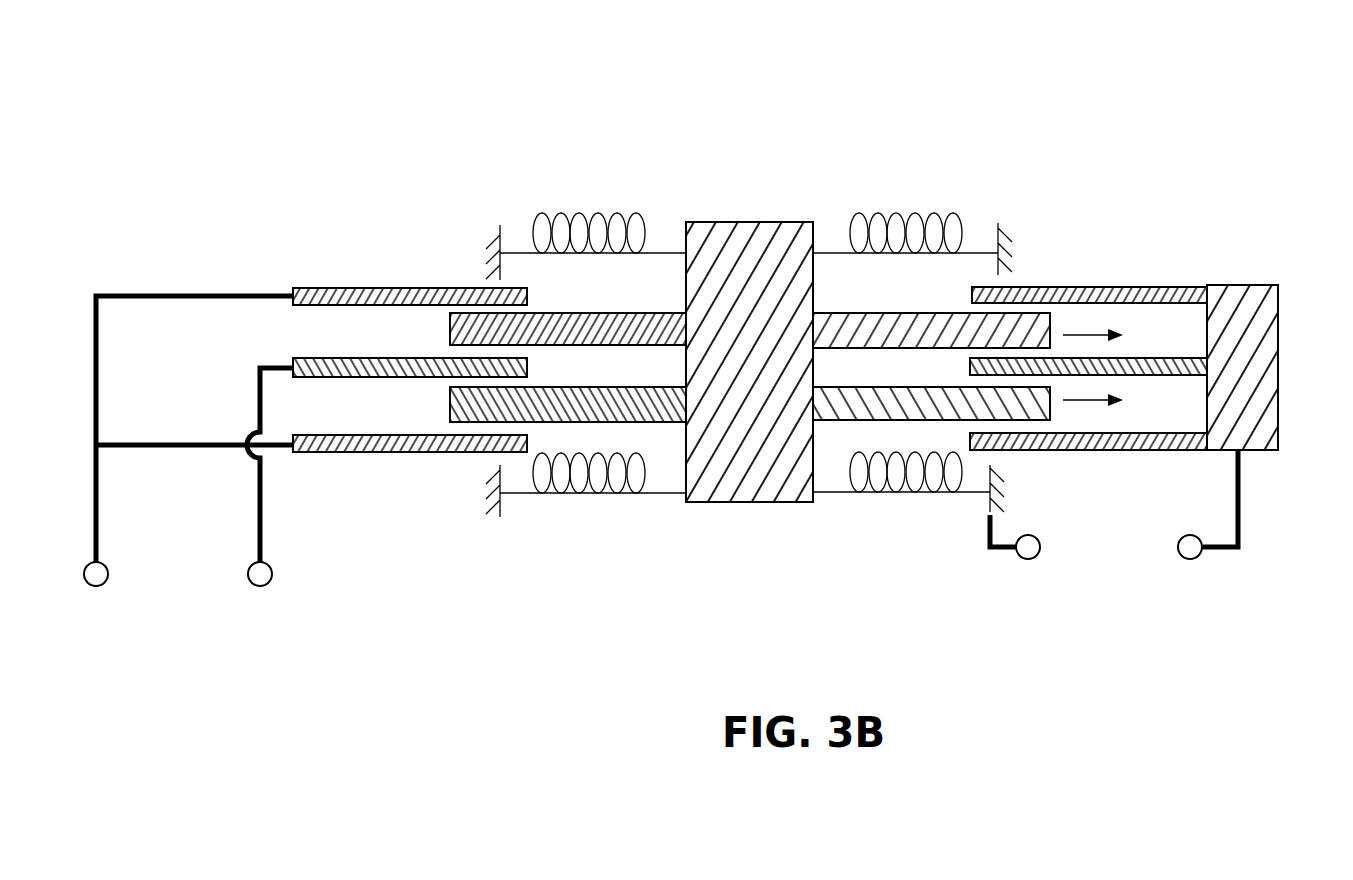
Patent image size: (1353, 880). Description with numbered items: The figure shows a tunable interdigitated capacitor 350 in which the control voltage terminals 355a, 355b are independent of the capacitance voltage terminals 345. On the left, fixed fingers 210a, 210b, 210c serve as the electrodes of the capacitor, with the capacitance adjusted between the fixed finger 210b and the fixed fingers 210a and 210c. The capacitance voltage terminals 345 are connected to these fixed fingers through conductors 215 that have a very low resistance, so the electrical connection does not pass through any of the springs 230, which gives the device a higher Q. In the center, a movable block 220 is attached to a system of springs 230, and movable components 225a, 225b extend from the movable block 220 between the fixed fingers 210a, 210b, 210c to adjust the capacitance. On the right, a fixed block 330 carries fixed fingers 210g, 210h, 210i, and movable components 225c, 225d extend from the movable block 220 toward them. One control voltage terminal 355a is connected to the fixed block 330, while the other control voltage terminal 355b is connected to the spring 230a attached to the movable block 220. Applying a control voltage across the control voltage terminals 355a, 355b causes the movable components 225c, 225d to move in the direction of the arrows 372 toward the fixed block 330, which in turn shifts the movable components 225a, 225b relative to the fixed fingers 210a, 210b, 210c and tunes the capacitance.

The tunable interdigitated capacitor 350 is at (828, 69).
The conductors 215 is at (165, 292).
The capacitance voltage terminals 345 is at (251, 562).
The fixed finger 210a is at (333, 290).
The fixed finger 210b is at (332, 358).
The fixed finger 210c is at (370, 453).
The movable component 225a is at (585, 313).
The movable component 225b is at (600, 388).
The movable component 225c is at (857, 313).
The movable component 225d is at (857, 388).
The movable block 220 is at (752, 207).
The springs 230 is at (541, 220).
The spring 230a is at (883, 493).
The fixed finger 210g is at (1130, 286).
The fixed finger 210h is at (1130, 358).
The fixed finger 210i is at (1122, 451).
The arrows 372 is at (1080, 332).
The fixed block 330 is at (1252, 266).
The control voltage terminal 355a is at (1193, 559).
The control voltage terminal 355b is at (1027, 559).